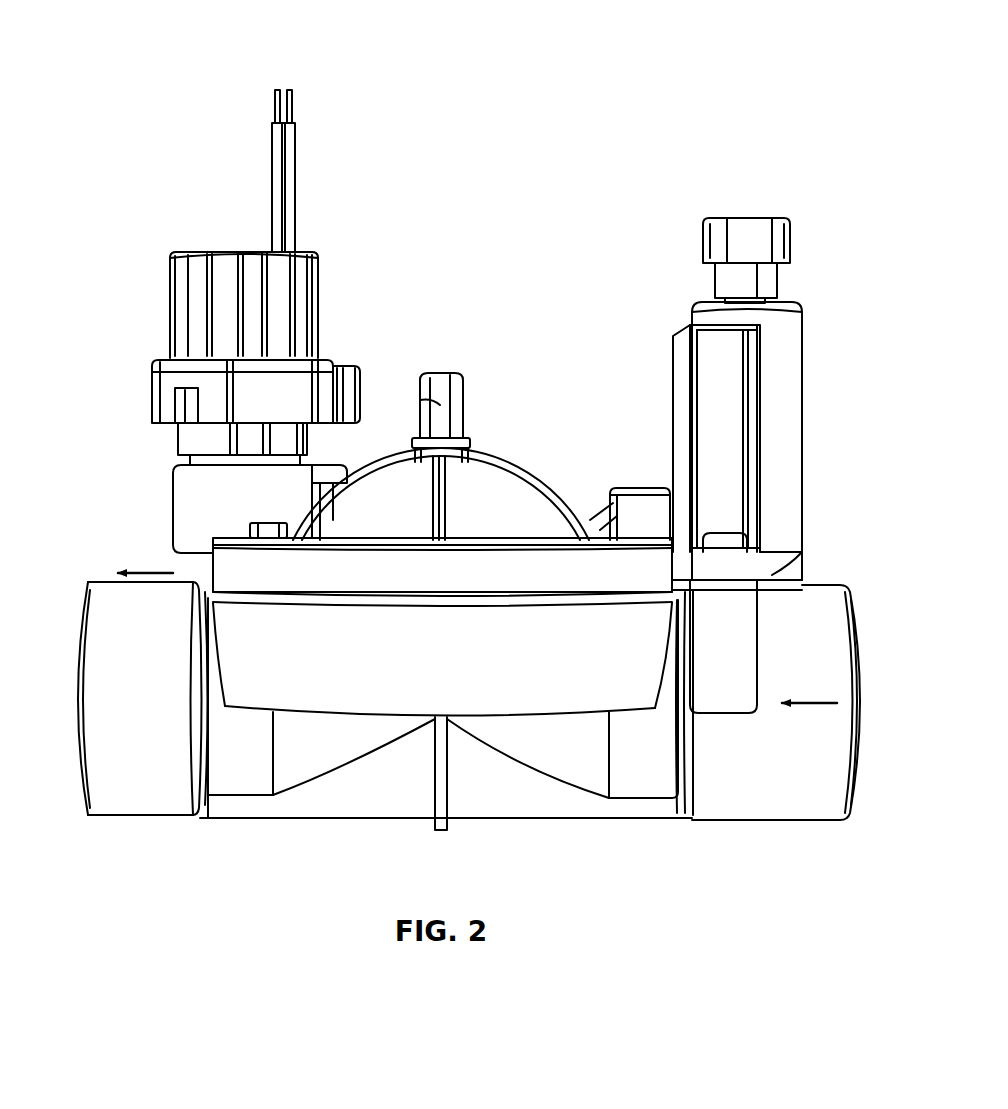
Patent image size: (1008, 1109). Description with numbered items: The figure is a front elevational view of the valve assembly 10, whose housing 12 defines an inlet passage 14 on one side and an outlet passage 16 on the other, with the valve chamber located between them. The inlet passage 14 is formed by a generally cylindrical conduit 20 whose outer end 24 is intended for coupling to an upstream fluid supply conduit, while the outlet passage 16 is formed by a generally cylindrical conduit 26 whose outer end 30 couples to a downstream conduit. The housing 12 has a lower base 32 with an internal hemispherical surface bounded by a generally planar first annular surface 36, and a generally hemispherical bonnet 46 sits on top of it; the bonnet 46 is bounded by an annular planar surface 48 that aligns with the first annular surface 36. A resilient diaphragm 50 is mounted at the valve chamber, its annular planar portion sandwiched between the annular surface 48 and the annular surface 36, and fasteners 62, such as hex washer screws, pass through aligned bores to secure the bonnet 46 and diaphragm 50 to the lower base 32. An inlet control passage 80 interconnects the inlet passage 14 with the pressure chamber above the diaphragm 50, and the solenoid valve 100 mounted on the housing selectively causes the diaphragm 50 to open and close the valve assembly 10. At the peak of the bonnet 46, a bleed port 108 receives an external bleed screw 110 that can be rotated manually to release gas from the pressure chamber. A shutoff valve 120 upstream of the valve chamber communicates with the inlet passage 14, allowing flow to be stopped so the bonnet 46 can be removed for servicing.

The valve assembly 10 is at (168, 50).
The housing 12 is at (548, 826).
The inlet passage 14 is at (765, 805).
The outlet passage 16 is at (122, 800).
The cylindrical conduit 20 is at (600, 801).
The outer end 24 is at (860, 792).
The cylindrical conduit 26 is at (233, 803).
The outer end 30 is at (73, 790).
The lower base 32 is at (318, 714).
The first annular surface 36 is at (538, 598).
The bonnet 46 is at (535, 472).
The annular planar surface 48 is at (563, 606).
The resilient diaphragm 50 is at (283, 601).
The fastener 62 is at (262, 522).
The inlet control passage 80 is at (642, 487).
The solenoid valve 100 is at (168, 272).
The bleed port 108 is at (472, 440).
The external bleed screw 110 is at (465, 385).
The shutoff valve 120 is at (790, 237).